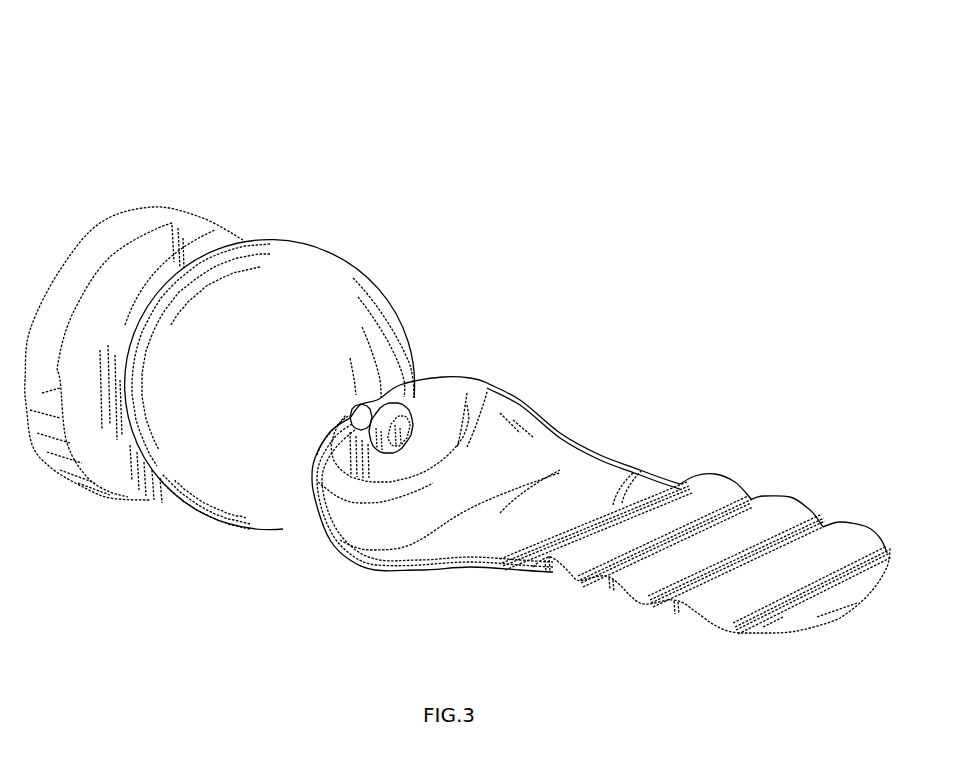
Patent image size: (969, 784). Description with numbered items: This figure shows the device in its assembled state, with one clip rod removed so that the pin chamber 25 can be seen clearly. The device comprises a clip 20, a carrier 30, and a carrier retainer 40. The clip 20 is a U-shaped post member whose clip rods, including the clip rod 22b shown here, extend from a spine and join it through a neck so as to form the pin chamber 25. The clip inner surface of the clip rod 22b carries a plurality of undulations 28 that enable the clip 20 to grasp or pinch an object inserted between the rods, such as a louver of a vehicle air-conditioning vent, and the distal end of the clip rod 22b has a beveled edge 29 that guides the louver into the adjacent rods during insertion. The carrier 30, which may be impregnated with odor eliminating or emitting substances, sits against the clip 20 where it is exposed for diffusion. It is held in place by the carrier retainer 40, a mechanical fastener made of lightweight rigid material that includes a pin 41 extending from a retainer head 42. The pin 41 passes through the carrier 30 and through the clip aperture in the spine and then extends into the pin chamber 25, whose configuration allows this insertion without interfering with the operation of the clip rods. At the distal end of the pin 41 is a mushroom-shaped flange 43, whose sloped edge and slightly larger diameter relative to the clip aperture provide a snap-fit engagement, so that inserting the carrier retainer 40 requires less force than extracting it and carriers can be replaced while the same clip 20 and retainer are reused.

The clip 20 is at (695, 297).
The clip rod 22b is at (610, 445).
The pin chamber 25 is at (423, 519).
The undulations 28 is at (707, 593).
The beveled edge 29 is at (838, 595).
The carrier 30 is at (386, 216).
The carrier retainer 40 is at (203, 166).
The pin 41 is at (350, 420).
The retainer head 42 is at (190, 235).
The flange 43 is at (395, 403).